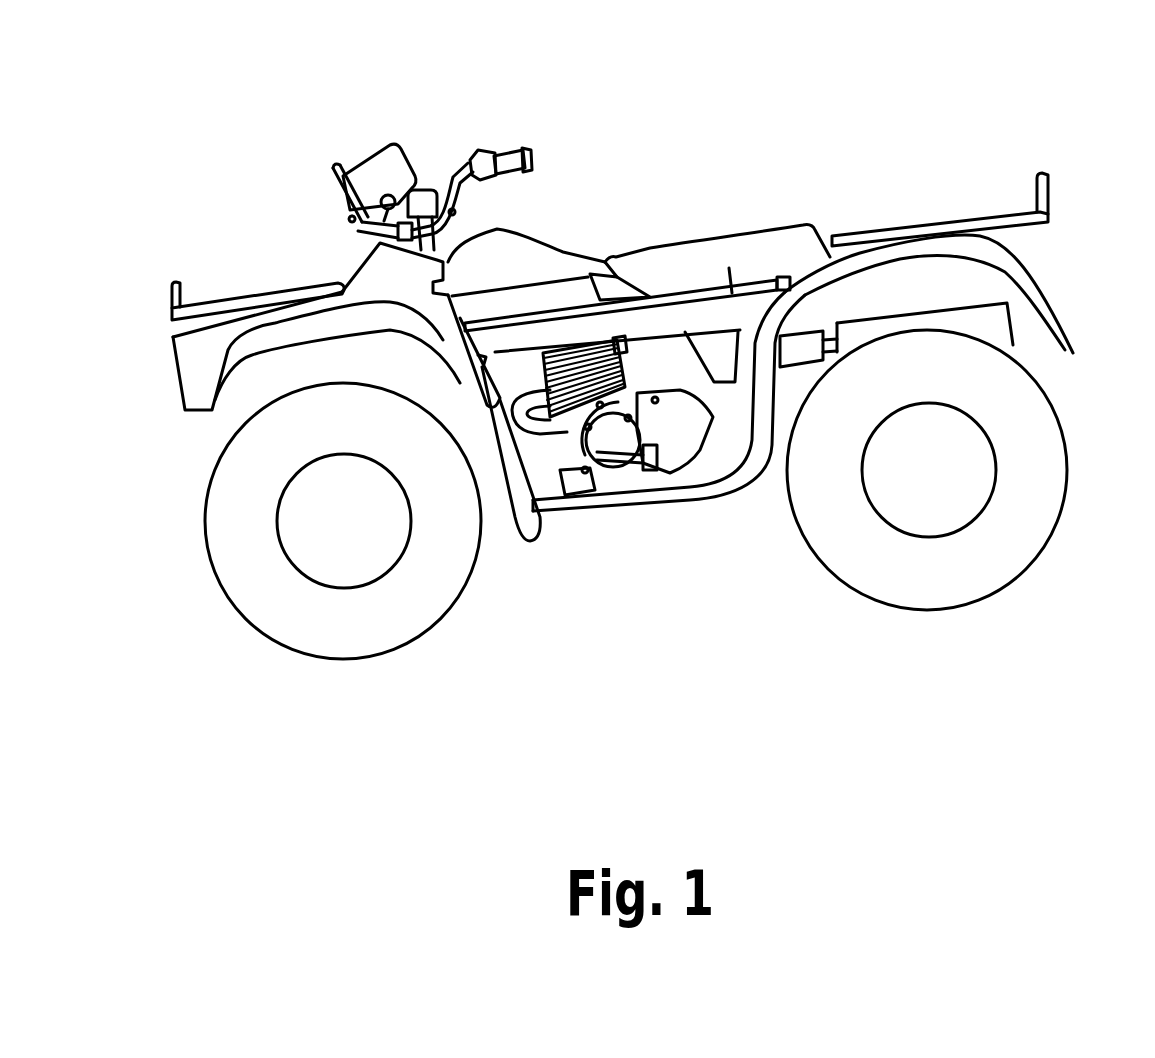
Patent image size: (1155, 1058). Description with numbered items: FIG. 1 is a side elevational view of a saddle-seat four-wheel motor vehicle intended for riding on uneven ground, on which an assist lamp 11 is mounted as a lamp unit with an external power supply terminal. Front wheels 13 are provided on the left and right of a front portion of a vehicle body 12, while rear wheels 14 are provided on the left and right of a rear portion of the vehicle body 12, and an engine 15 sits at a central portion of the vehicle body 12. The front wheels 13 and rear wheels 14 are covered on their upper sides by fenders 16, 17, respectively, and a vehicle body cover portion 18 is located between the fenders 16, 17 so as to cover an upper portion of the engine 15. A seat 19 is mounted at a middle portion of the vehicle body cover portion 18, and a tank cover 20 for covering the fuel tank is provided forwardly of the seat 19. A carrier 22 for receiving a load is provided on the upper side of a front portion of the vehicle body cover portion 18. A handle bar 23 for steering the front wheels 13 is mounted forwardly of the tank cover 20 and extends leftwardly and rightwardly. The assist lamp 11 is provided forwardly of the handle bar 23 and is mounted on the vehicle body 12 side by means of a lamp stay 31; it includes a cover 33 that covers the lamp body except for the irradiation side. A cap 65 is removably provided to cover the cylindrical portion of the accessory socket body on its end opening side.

The assist lamp 11 is at (400, 136).
The vehicle body 12 is at (568, 512).
The front wheels 13 is at (433, 627).
The rear wheels 14 is at (1004, 566).
The engine 15 is at (556, 448).
The fender 16 is at (273, 342).
The fender 17 is at (1010, 260).
The vehicle body cover portion 18 is at (727, 292).
The seat 19 is at (683, 260).
The tank cover 20 is at (540, 253).
The carrier 22 is at (243, 297).
The handle bar 23 is at (453, 162).
The lamp stay 31 is at (345, 194).
The cover 33 is at (367, 175).
The cap 65 is at (378, 243).